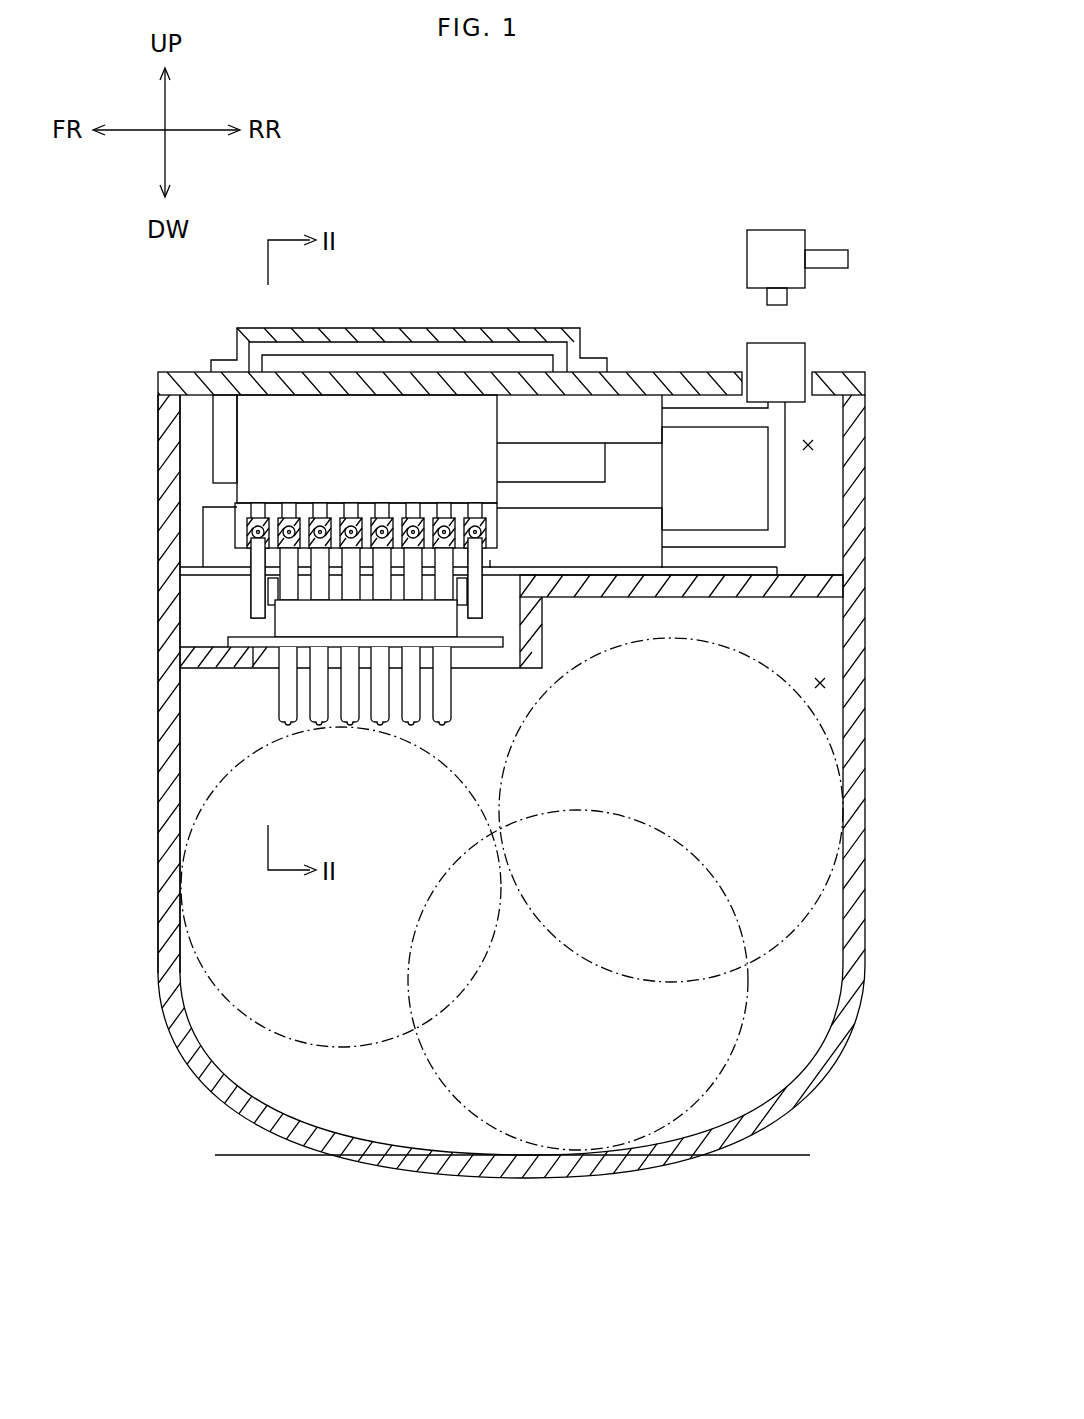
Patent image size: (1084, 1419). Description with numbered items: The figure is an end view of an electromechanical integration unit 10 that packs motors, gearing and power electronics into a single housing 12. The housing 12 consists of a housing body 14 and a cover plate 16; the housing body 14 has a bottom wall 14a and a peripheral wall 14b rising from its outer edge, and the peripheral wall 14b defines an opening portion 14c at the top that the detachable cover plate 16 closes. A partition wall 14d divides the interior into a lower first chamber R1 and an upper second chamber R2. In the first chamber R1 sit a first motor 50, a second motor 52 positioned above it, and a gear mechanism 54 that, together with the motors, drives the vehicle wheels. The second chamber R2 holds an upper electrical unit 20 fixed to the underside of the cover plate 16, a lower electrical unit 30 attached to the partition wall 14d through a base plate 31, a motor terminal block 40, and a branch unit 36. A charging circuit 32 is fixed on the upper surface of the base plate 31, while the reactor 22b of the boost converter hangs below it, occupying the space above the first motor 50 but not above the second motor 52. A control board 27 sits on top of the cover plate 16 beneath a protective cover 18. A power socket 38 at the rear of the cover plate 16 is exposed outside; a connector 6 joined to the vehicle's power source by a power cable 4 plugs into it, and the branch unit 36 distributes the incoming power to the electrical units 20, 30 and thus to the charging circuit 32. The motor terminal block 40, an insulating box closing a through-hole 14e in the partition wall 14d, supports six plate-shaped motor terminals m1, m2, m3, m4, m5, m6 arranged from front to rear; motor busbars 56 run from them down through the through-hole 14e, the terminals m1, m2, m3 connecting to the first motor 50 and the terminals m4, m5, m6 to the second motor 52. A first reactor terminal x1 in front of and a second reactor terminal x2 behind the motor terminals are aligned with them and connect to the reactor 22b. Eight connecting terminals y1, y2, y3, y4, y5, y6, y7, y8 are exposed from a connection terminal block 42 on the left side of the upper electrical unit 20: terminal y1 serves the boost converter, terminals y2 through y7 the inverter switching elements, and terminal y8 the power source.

The power cable 4 is at (838, 258).
The connector 6 is at (790, 248).
The electromechanical integration unit 10 is at (906, 176).
The housing 12 is at (218, 1230).
The housing body 14 is at (215, 1083).
The bottom wall 14a is at (495, 1160).
The peripheral wall 14b is at (172, 545).
The opening portion 14c is at (188, 405).
The partition wall 14d is at (845, 580).
The through-hole 14e is at (263, 720).
The cover plate 16 is at (357, 383).
The protective cover 18 is at (543, 360).
The upper electrical unit 20 is at (213, 438).
The reactor 22b is at (250, 588).
The control board 27 is at (452, 357).
The lower electrical unit 30 is at (199, 597).
The base plate 31 is at (777, 568).
The charging circuit 32 is at (203, 530).
The branch unit 36 is at (790, 485).
The power socket 38 is at (805, 345).
The motor terminal block 40 is at (457, 627).
The connection terminal block 42 is at (210, 452).
The first motor 50 is at (182, 1037).
The second motor 52 is at (800, 940).
The gear mechanism 54 is at (725, 1078).
The motor busbars 56 is at (442, 728).
The first chamber R1 is at (822, 683).
The second chamber R2 is at (808, 445).
The first reactor terminal x1 is at (253, 610).
The second reactor terminal x2 is at (490, 565).
The first connection terminal y1 is at (254, 512).
The second connection terminal y2 is at (285, 512).
The third connection terminal y3 is at (316, 512).
The fourth connection terminal y4 is at (347, 512).
The fifth connection terminal y5 is at (378, 512).
The sixth connection terminal y6 is at (409, 512).
The seventh connection terminal y7 is at (440, 512).
The eighth connection terminal y8 is at (471, 512).
The first motor terminal m1 is at (293, 528).
The second motor terminal m2 is at (324, 528).
The third motor terminal m3 is at (355, 528).
The fourth motor terminal m4 is at (386, 528).
The fifth motor terminal m5 is at (417, 528).
The sixth motor terminal m6 is at (448, 528).